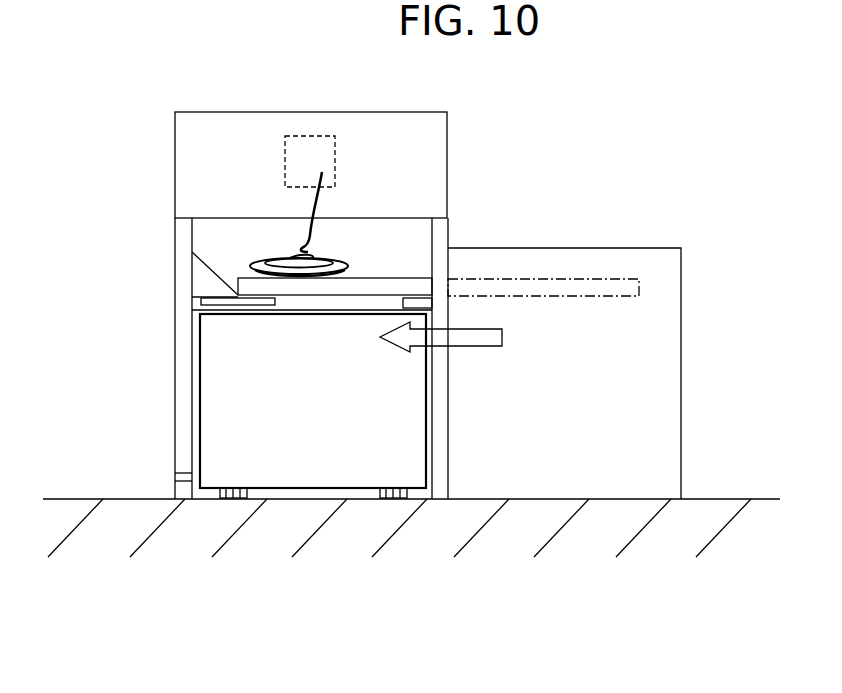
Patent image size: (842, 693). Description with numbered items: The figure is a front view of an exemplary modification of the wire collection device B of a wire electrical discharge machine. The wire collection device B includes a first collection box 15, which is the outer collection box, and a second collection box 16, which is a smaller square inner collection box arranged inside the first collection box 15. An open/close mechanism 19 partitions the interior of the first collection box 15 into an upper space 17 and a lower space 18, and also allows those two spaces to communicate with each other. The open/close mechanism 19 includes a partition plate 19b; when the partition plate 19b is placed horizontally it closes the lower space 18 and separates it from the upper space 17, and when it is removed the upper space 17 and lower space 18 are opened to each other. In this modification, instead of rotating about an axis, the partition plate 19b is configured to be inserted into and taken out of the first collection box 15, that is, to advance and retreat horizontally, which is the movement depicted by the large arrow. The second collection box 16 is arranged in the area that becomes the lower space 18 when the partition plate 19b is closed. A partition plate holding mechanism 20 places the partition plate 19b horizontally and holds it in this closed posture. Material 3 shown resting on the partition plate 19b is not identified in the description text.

The wire collection device B is at (534, 128).
The noodle strands 3 is at (311, 232).
The first collection box 15 is at (449, 170).
The second collection box 16 is at (199, 370).
The upper space 17 is at (243, 254).
The lower space 18 is at (307, 455).
The open/close mechanism 19 is at (663, 248).
The partition plate 19b is at (364, 283).
The partition plate holding mechanism 20 is at (198, 285).